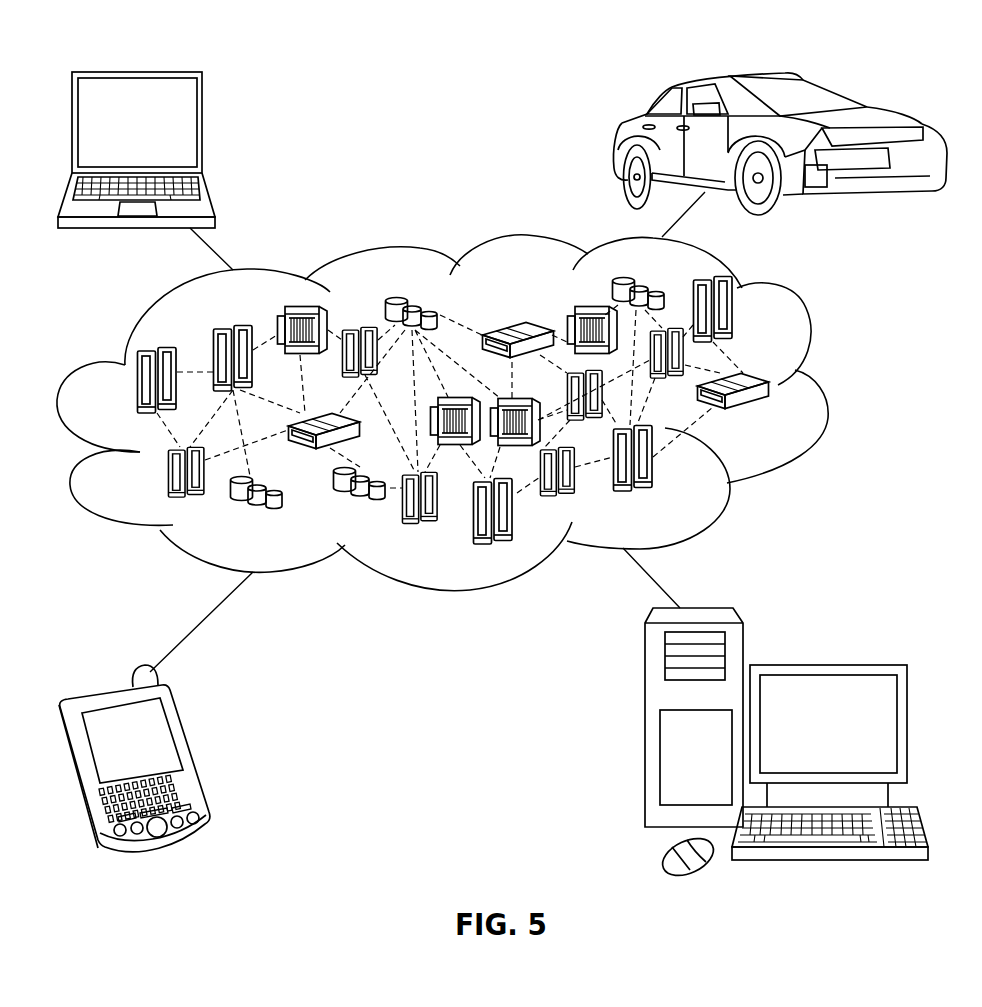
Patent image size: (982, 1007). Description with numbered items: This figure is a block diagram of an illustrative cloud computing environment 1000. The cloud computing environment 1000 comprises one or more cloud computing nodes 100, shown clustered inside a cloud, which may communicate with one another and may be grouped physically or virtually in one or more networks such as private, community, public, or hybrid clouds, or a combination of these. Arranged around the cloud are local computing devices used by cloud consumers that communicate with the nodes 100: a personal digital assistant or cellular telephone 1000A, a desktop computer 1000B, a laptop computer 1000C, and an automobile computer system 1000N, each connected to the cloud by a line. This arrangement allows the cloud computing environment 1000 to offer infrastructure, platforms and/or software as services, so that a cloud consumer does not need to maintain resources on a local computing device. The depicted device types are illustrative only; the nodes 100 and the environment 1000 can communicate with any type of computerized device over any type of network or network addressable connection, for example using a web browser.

The laptop computer 1000C is at (203, 130).
The automobile computer system 1000N is at (620, 144).
The cloud computing environment 1000 is at (828, 387).
The cloud computing nodes 100 is at (772, 418).
The personal digital assistant (PDA) or cellular telephone 1000A is at (193, 753).
The desktop computer 1000B is at (825, 665).